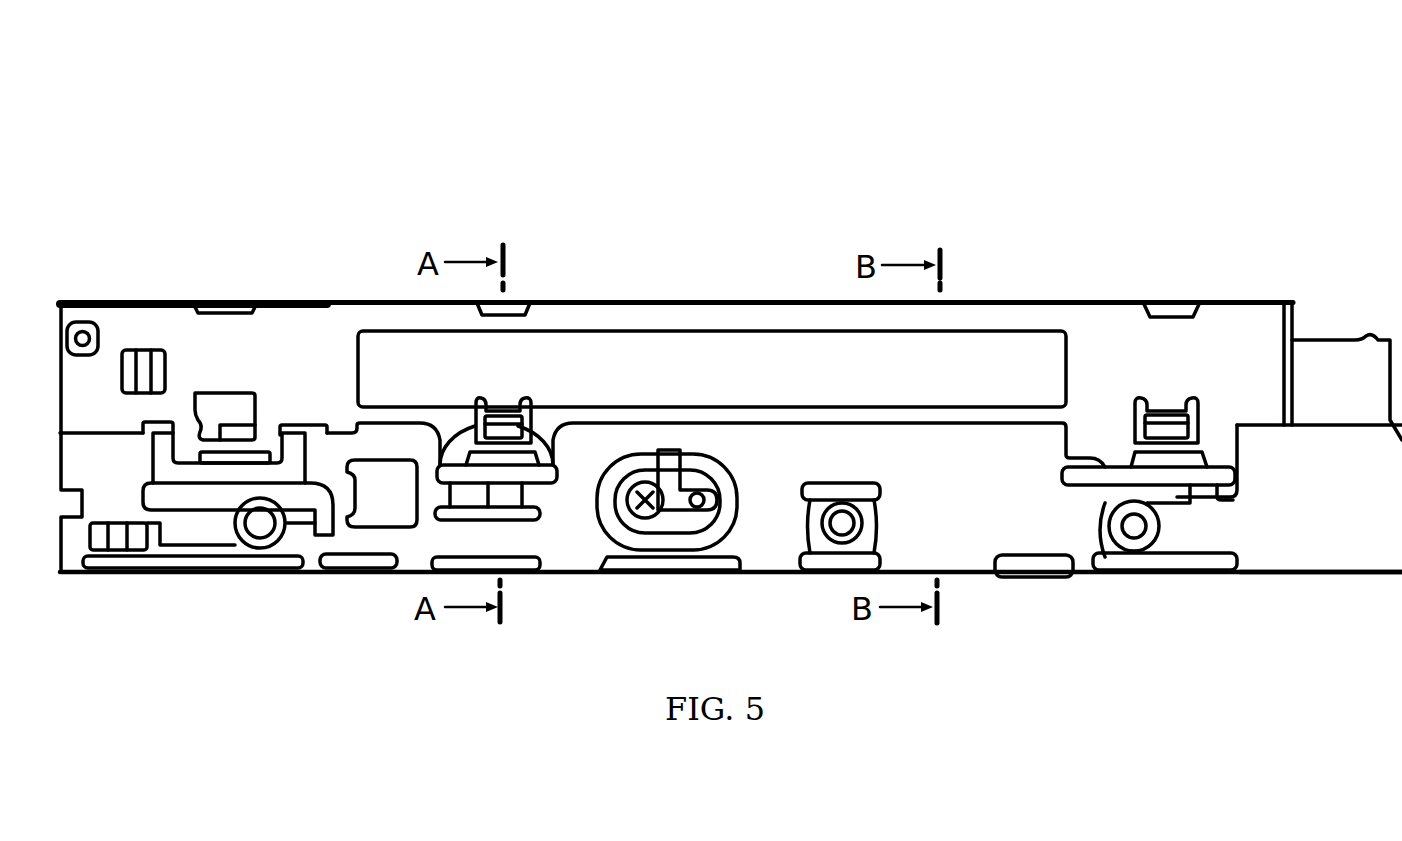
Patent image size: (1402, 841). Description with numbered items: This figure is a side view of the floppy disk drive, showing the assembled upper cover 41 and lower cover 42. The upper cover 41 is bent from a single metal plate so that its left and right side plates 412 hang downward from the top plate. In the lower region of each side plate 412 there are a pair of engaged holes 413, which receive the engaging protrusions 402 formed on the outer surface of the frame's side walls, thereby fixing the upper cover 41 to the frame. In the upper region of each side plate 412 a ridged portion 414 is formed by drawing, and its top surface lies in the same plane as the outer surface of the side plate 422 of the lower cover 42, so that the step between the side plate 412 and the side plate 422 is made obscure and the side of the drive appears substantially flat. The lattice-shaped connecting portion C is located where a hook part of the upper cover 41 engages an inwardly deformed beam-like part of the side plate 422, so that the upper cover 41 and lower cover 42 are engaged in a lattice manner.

The upper cover 41 is at (798, 296).
The lower cover 42 is at (756, 583).
The side plate 412 is at (1094, 348).
The engaged hole 413 is at (437, 480).
The ridged portion 414 is at (677, 348).
The engaging protrusion 402 is at (548, 458).
The side plate 422 is at (1303, 556).
The lattice-shaped connecting portion C is at (263, 385).